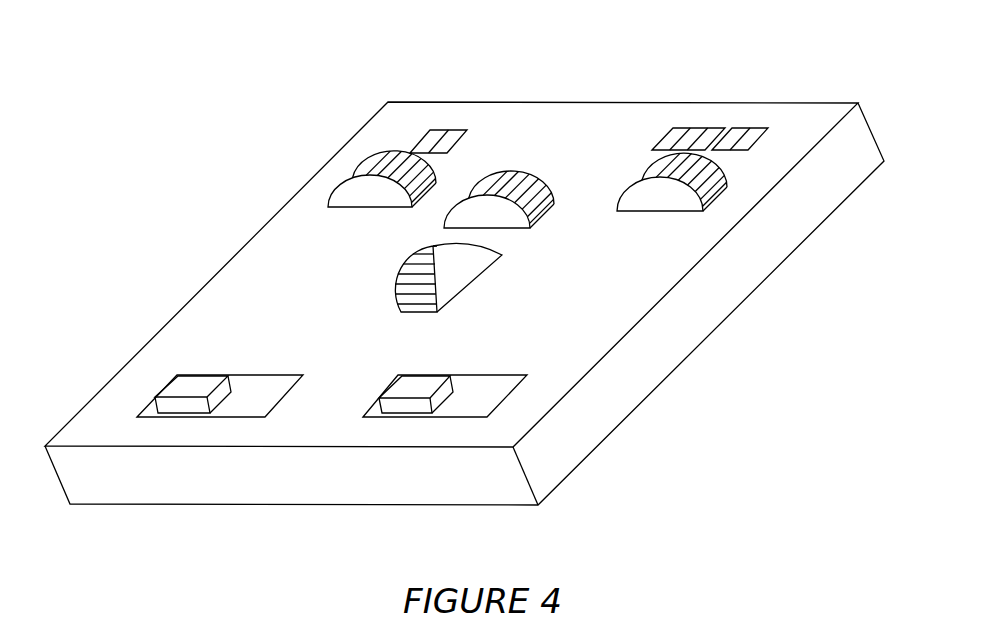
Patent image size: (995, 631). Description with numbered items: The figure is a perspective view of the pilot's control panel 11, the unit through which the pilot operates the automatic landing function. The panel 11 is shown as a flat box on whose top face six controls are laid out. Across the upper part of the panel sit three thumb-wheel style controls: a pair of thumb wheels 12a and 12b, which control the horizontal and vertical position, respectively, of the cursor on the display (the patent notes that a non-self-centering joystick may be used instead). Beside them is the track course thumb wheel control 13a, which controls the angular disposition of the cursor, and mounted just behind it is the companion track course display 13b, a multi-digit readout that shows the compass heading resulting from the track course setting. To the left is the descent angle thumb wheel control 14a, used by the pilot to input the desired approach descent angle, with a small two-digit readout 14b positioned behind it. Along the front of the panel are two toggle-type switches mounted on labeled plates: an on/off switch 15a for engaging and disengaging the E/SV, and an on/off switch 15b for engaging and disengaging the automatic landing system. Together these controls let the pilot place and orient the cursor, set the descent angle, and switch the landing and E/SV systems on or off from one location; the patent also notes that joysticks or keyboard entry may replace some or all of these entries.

The control panel 11 is at (472, 513).
The thumb wheel 12a is at (510, 168).
The thumb wheel 12b is at (402, 268).
The track course thumb wheel control 13a is at (715, 202).
The track course display 13b is at (686, 152).
The descent angle thumb wheel control 14a is at (365, 156).
The descent angle display 14b is at (462, 130).
The on/off switch 15a is at (165, 395).
The on/off switch 15b is at (400, 395).